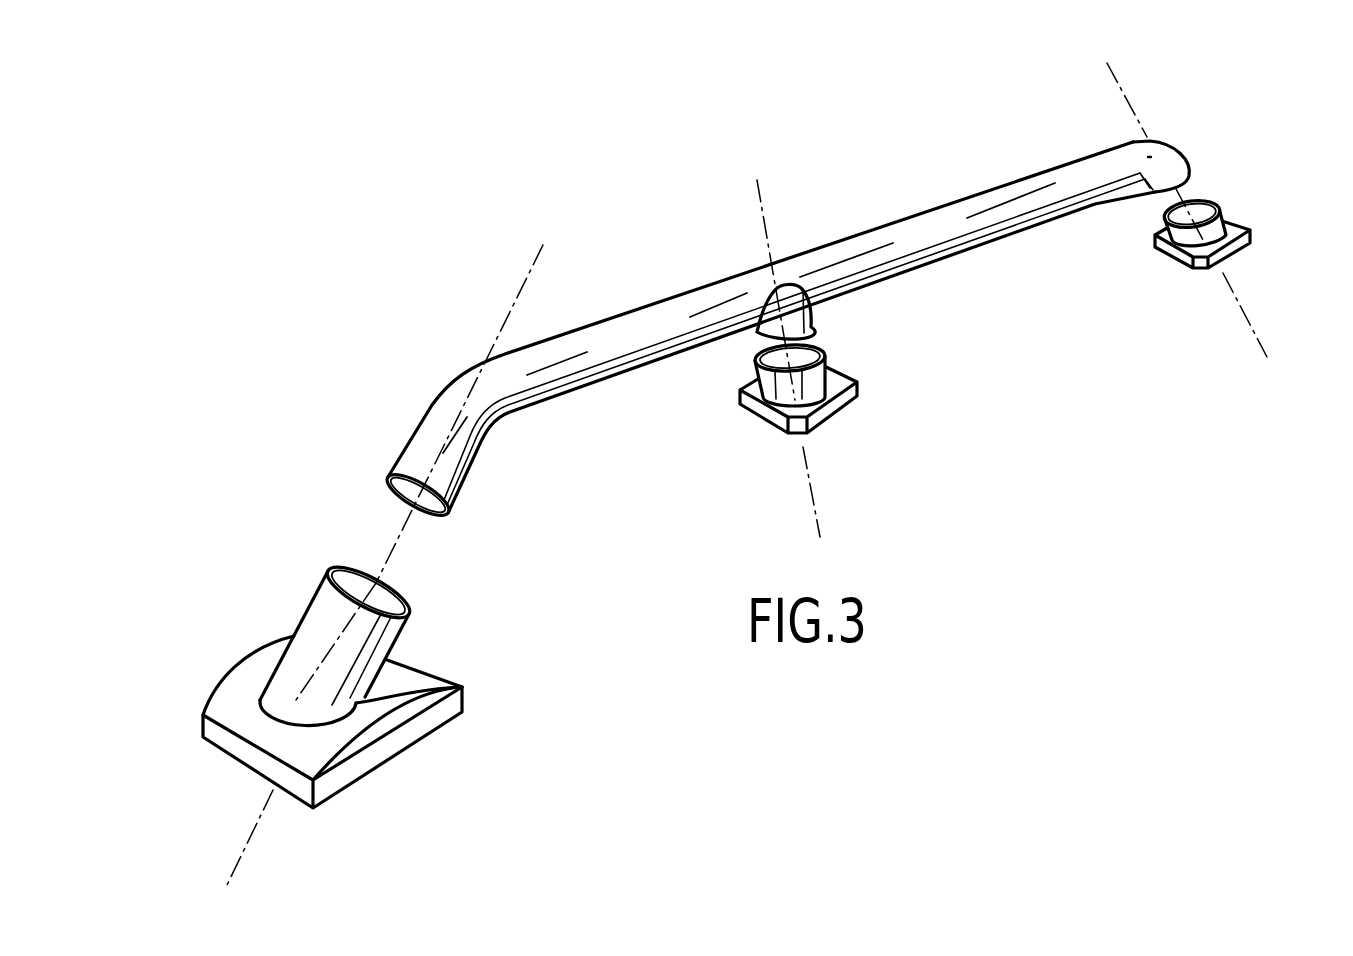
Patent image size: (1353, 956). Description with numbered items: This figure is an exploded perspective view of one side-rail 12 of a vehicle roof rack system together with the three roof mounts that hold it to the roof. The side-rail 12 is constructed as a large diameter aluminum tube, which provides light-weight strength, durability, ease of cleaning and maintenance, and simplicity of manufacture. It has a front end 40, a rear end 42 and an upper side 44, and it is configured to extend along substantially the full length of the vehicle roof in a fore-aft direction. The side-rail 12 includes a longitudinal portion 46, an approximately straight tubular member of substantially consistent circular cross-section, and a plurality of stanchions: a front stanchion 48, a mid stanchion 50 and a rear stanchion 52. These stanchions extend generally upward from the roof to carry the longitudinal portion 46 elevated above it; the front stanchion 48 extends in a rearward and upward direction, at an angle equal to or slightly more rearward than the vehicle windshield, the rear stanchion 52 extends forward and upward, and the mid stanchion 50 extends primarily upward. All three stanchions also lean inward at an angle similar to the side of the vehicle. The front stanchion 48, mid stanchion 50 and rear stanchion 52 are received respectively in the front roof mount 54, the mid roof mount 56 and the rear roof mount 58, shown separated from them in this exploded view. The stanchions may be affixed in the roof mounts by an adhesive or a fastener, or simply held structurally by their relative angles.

The side-rail 12 is at (947, 213).
The front end 40 is at (490, 283).
The rear end 42 is at (1230, 138).
The upper side 44 is at (656, 272).
The longitudinal portion 46 is at (1050, 197).
The front stanchion 48 is at (462, 440).
The mid stanchion 50 is at (800, 313).
The rear stanchion 52 is at (1160, 162).
The front roof mount 54 is at (347, 693).
The mid roof mount 56 is at (813, 385).
The rear roof mount 58 is at (1205, 222).